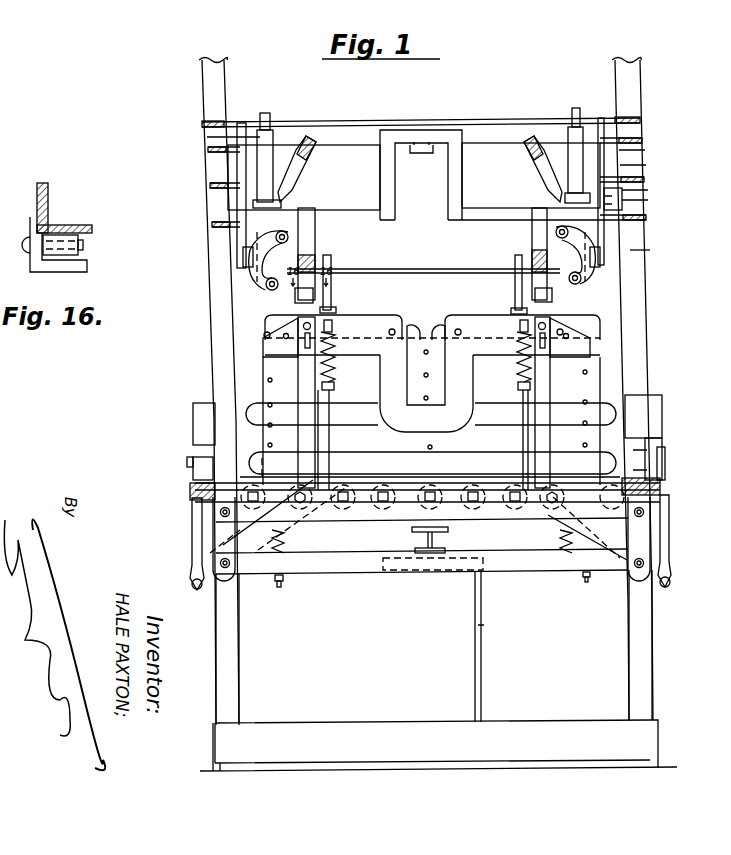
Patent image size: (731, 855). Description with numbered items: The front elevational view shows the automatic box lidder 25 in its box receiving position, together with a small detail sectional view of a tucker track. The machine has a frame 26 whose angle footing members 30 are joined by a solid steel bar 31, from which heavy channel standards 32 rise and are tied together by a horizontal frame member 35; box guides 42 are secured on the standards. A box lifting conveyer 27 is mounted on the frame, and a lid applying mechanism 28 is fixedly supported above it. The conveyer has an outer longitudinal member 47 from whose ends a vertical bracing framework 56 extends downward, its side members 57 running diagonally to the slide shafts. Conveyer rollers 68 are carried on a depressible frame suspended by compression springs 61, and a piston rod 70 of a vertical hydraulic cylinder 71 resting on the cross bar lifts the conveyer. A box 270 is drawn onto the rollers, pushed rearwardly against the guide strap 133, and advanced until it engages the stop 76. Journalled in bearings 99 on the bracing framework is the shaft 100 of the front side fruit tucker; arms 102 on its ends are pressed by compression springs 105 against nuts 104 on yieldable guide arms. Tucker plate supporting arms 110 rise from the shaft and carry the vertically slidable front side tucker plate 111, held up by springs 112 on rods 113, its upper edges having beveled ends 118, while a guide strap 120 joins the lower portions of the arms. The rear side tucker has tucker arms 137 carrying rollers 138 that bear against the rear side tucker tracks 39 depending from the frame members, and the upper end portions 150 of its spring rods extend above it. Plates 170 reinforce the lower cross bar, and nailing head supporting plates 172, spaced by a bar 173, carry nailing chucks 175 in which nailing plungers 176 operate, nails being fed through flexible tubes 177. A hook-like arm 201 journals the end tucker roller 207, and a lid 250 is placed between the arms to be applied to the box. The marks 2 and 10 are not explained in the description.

In FIG. 1, the section line / viewing direction 2 is at (665, 100).
In FIG. 1, the machine 10 is at (723, 313).
In FIG. 1, the automatic box lidder 25 is at (657, 192).
In FIG. 1, the frame 26 is at (646, 263).
In FIG. 1, the box lifting conveyer 27 is at (641, 466).
In FIG. 1, the lid applying mechanism 28 is at (625, 166).
In FIG. 1, the angle footing members 30 is at (655, 735).
In FIG. 1, the solid steel bar 31 is at (563, 726).
In FIG. 1, the channel standards 32 is at (212, 309).
In FIG. 1, the horizontal frame member 35 is at (490, 140).
In FIG. 1, the rear side tucker tracks 39 is at (315, 233).
In FIG. 16, the rear side tucker tracks 39 is at (48, 205).
In FIG. 1, the box guides 42 is at (205, 403).
In FIG. 1, the outer longitudinal member 47 is at (365, 513).
In FIG. 1, the vertical bracing framework 56 is at (545, 565).
In FIG. 1, the side members 57 is at (236, 651).
In FIG. 1, the compression springs 61 is at (285, 546).
In FIG. 1, the conveyer rollers 68 is at (540, 500).
In FIG. 1, the piston rod 70 is at (441, 541).
In FIG. 1, the hydraulic cylinder 71 is at (481, 608).
In FIG. 1, the stop 76 is at (246, 478).
In FIG. 1, the bearings 99 is at (224, 525).
In FIG. 1, the shaft 100 is at (193, 491).
In FIG. 1, the arms 102 is at (661, 492).
In FIG. 1, the nuts 104 is at (670, 580).
In FIG. 1, the compression springs 105 is at (195, 546).
In FIG. 1, the tucker plate supporting arms 110 is at (545, 385).
In FIG. 1, the front side tucker plate 111 is at (475, 320).
In FIG. 1, the springs 112 is at (331, 360).
In FIG. 1, the rods 113 is at (330, 436).
In FIG. 1, the beveled ends 118 is at (267, 333).
In FIG. 1, the guide strap 120 is at (400, 466).
In FIG. 1, the guide strap 133 is at (606, 410).
In FIG. 16, the tucker arms 137 is at (67, 263).
In FIG. 1, the rollers 138 is at (331, 283).
In FIG. 16, the rollers 138 is at (84, 248).
In FIG. 1, the upper end portions 150 is at (331, 264).
In FIG. 1, the plates 170 is at (624, 200).
In FIG. 1, the nailing head supporting plates 172 is at (600, 128).
In FIG. 1, the bar 173 is at (424, 140).
In FIG. 1, the nailing chucks 175 is at (563, 198).
In FIG. 1, the nailing plungers 176 is at (575, 108).
In FIG. 1, the flexible tubes 177 is at (536, 142).
In FIG. 1, the hook-like arm 201 is at (245, 242).
In FIG. 1, the end tucker roller 207 is at (270, 292).
In FIG. 1, the lid 250 is at (374, 270).
In FIG. 1, the box 270 is at (275, 372).